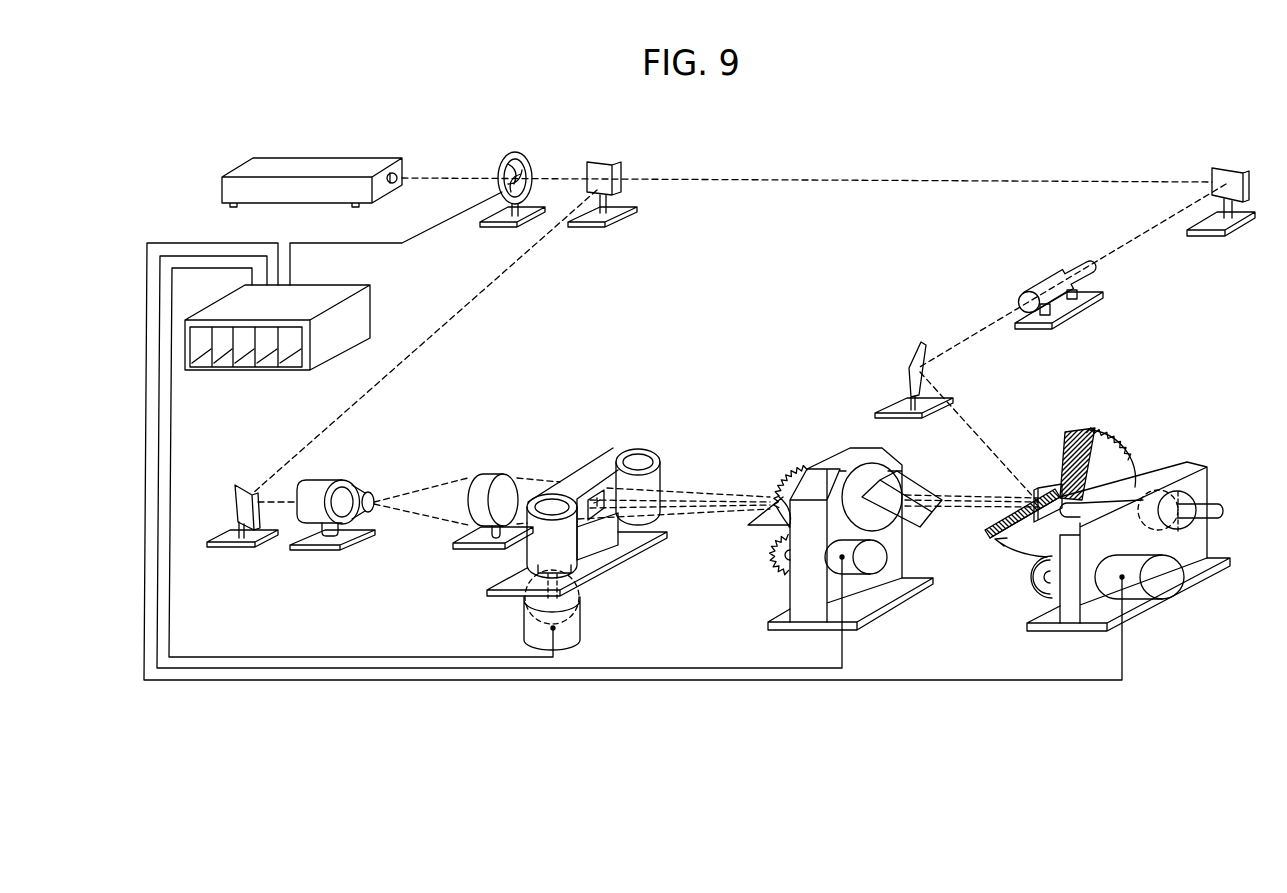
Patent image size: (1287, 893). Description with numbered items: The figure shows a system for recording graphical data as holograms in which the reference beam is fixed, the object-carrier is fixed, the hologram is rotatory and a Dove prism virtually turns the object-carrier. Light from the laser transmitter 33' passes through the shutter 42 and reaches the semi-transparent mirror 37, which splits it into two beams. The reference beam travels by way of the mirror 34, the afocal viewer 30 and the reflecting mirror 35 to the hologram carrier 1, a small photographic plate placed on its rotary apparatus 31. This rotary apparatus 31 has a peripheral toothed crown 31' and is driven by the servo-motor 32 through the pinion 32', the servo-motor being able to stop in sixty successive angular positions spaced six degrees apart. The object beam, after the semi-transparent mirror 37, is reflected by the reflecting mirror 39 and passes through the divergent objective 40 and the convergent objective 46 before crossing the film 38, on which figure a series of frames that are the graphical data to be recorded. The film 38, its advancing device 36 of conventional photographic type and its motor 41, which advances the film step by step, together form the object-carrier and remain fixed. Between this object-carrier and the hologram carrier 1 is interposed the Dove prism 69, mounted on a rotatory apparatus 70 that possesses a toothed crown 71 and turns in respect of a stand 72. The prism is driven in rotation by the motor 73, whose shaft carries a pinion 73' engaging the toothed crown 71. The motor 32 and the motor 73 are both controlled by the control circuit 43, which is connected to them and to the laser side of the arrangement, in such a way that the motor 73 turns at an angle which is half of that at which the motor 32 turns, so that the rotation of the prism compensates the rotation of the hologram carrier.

The hologram carrier 1 is at (1050, 485).
The afocal viewer 30 is at (1043, 287).
The rotary apparatus 31 is at (1083, 529).
The peripheral toothed crown 31' is at (1121, 440).
The servo-motor 32 is at (1139, 577).
The pinion 32' is at (1027, 584).
The laser transmitter 33' is at (312, 169).
The mirror 34 is at (1218, 167).
The reflecting mirror 35 is at (914, 355).
The advancing device 36 is at (550, 560).
The semi-transparent mirror 37 is at (600, 169).
The film 38 is at (608, 492).
The reflecting mirror 39 is at (242, 483).
The divergent objective 40 is at (320, 482).
The motor 41 is at (582, 622).
The shutter 42 is at (511, 160).
The control circuit 43 is at (371, 318).
The convergent objective 46 is at (487, 480).
The Dove prism 69 is at (898, 488).
The rotatory apparatus 70 is at (773, 498).
The toothed crown 71 is at (793, 470).
The stand 72 is at (842, 460).
The motor 73 is at (856, 557).
The pinion 73' is at (766, 561).